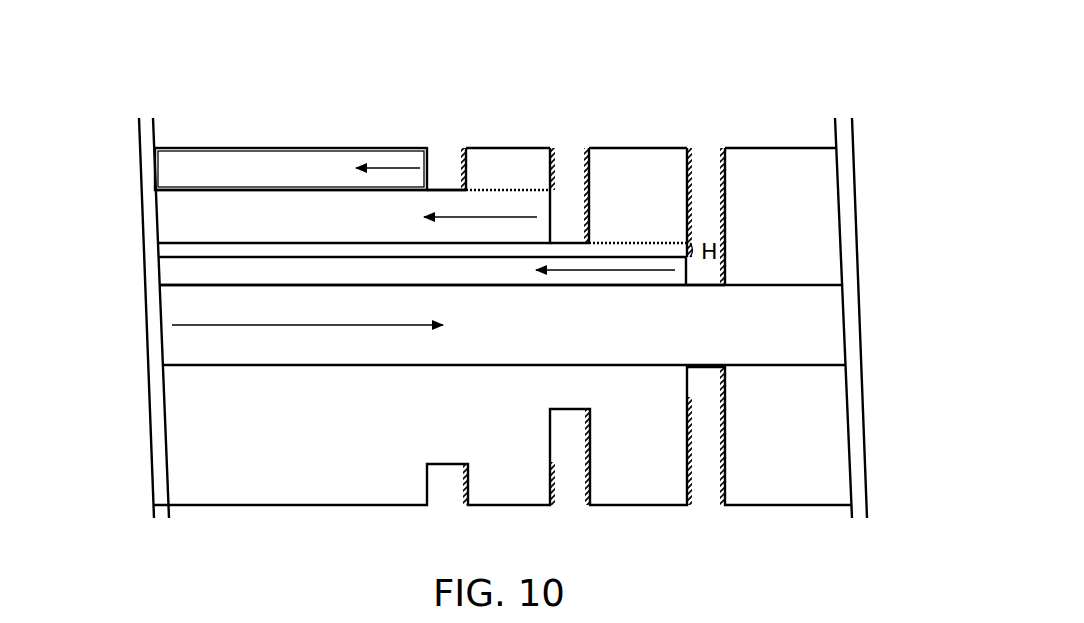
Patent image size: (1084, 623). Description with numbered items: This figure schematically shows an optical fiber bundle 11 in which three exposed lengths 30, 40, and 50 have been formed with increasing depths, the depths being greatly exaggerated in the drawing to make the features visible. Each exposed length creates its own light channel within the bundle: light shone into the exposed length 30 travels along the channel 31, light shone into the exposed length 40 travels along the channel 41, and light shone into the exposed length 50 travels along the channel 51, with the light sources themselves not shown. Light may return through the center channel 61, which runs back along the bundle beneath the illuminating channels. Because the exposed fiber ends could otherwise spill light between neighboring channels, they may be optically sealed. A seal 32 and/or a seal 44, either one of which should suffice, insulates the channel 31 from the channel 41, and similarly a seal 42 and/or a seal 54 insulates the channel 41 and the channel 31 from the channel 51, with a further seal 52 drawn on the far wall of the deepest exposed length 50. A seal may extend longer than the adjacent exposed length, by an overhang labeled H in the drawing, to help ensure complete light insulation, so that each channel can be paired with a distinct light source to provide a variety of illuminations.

The optical fiber bundle 11 is at (250, 148).
The exposed length 30 is at (421, 130).
The channel 31 is at (291, 169).
The optical seal 32 is at (461, 150).
The exposed length 40 is at (572, 130).
The channel 41 is at (353, 216).
The seal 42 is at (585, 150).
The seal 44 is at (563, 148).
The exposed length 50 is at (706, 130).
The channel 51 is at (422, 272).
The seal 52 is at (722, 150).
The seal 54 is at (697, 148).
The center channel 61 is at (503, 325).